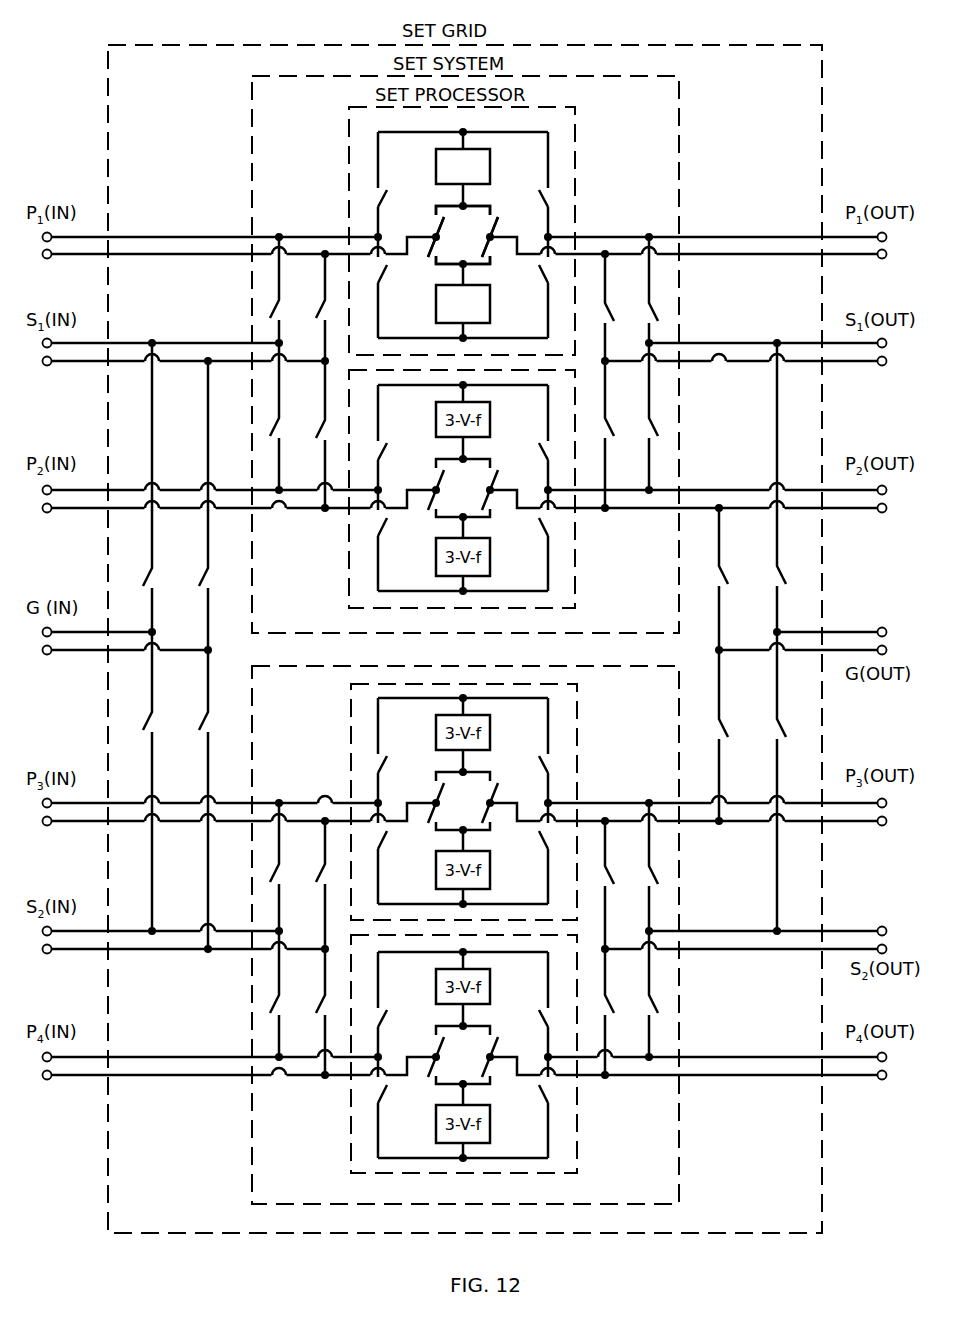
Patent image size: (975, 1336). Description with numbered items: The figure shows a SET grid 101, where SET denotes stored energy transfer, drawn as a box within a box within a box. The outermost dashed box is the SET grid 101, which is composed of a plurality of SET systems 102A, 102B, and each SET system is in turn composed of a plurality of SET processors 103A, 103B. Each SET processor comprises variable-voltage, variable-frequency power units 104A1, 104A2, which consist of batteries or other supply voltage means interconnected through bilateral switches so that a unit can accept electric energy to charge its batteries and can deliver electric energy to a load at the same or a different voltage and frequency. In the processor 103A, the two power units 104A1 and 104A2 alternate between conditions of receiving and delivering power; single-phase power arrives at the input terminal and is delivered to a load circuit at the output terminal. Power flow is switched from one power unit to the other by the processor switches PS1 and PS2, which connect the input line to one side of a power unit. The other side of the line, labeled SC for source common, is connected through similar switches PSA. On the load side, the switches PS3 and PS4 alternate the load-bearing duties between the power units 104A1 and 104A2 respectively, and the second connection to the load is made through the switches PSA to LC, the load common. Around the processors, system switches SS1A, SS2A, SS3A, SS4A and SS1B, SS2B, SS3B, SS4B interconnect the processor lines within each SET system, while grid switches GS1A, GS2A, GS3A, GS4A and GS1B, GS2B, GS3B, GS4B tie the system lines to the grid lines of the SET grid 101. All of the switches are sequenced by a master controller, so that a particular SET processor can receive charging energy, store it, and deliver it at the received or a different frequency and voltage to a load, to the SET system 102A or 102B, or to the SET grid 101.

The SET grid 101 is at (465, 619).
The SET system 102A is at (505, 354).
The SET system 102B is at (507, 935).
The SET processor 103A is at (499, 231).
The SET processor 103B is at (500, 489).
The variable-voltage, variable-frequency power unit 104A1 is at (487, 163).
The variable-voltage, variable-frequency power unit 104A2 is at (488, 297).
The processor switch PS1 is at (392, 169).
The processor switch PS2 is at (394, 272).
The processor switch PS3 is at (577, 170).
The processor switch PS4 is at (583, 269).
The processor switches PSA is at (463, 235).
The source common SC is at (419, 220).
The load common LC is at (506, 220).
The system switch SS1A is at (291, 290).
The system switch SS1B is at (334, 290).
The system switch SS2A is at (300, 420).
The system switch SS2B is at (293, 450).
The system switch SS3A is at (622, 307).
The system switch SS3B is at (693, 290).
The system switch SS4A is at (622, 434).
The system switch SS4B is at (693, 416).
The grid switch GS1A is at (169, 487).
The grid switch GS1B is at (250, 505).
The grid switch GS2A is at (171, 781).
The grid switch GS2B is at (250, 799).
The grid switch GS3A is at (742, 579).
The grid switch GS3B is at (829, 487).
The grid switch GS4A is at (742, 735).
The grid switch GS4B is at (829, 781).